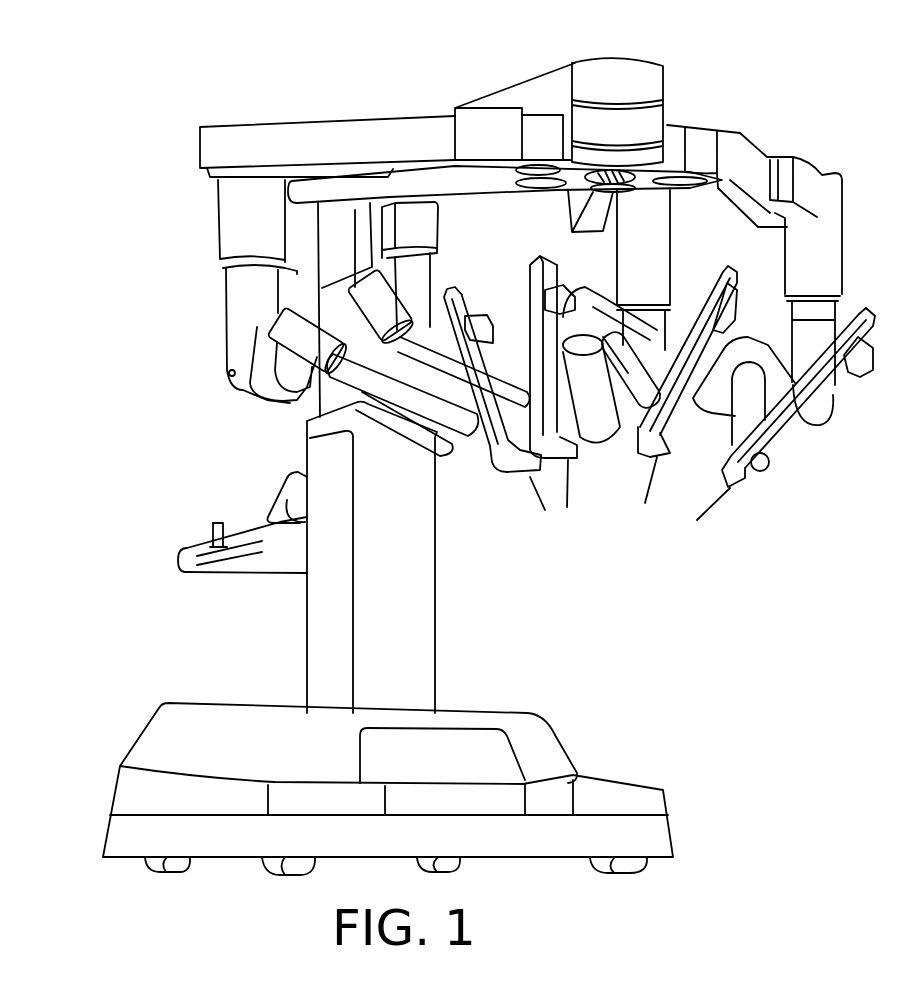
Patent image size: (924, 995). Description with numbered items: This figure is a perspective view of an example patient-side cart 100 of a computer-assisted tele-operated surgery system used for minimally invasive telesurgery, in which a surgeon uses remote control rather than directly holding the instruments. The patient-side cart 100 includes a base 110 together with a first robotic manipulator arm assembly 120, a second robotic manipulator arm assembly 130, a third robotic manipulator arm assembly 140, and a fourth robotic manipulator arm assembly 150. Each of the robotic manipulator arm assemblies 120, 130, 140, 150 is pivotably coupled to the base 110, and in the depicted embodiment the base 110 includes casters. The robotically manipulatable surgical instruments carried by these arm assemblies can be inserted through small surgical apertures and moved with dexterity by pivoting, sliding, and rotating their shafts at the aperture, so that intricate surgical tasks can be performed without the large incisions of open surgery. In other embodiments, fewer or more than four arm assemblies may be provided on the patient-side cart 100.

The patient-side cart 100 is at (164, 151).
The base 110 is at (252, 707).
The first robotic manipulator arm assembly 120 is at (245, 404).
The second robotic manipulator arm assembly 130 is at (447, 268).
The third robotic manipulator arm assembly 140 is at (690, 228).
The fourth robotic manipulator arm assembly 150 is at (783, 455).